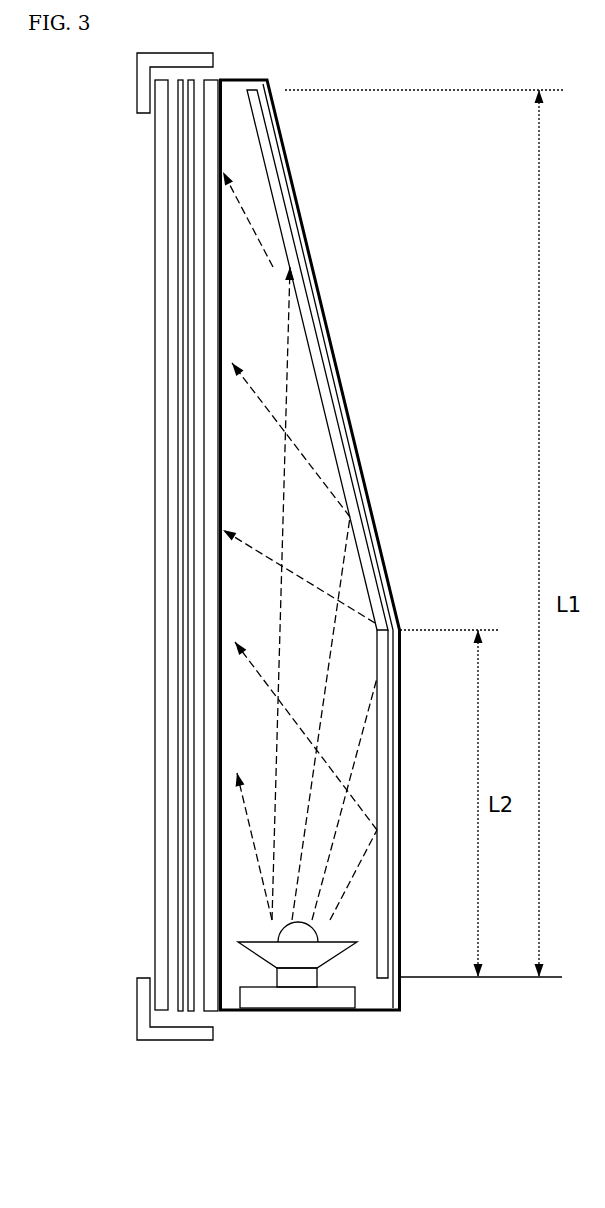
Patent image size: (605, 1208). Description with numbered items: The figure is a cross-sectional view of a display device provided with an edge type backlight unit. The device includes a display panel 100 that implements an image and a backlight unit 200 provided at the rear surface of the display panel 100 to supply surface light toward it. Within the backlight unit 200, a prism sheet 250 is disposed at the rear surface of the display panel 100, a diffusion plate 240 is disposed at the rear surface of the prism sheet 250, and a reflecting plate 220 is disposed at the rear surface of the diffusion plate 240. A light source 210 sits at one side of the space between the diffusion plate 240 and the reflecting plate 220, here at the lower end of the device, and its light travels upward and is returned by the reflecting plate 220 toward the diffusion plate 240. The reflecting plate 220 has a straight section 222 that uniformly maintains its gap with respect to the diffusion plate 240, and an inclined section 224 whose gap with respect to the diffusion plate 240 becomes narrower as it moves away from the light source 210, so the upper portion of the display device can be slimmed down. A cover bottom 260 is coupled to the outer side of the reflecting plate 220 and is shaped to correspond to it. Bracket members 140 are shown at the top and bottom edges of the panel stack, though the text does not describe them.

The display panel 100 is at (163, 909).
The chassis bracket 140 is at (143, 94).
The backlight unit 200 is at (463, 1123).
The light source 210 is at (295, 957).
The reflecting plate 220 is at (357, 601).
The straight section 222 is at (422, 804).
The inclined section 224 is at (282, 89).
The diffusion plate 240 is at (213, 1003).
The prism sheet 250 is at (188, 1004).
The cover bottom 260 is at (400, 1010).